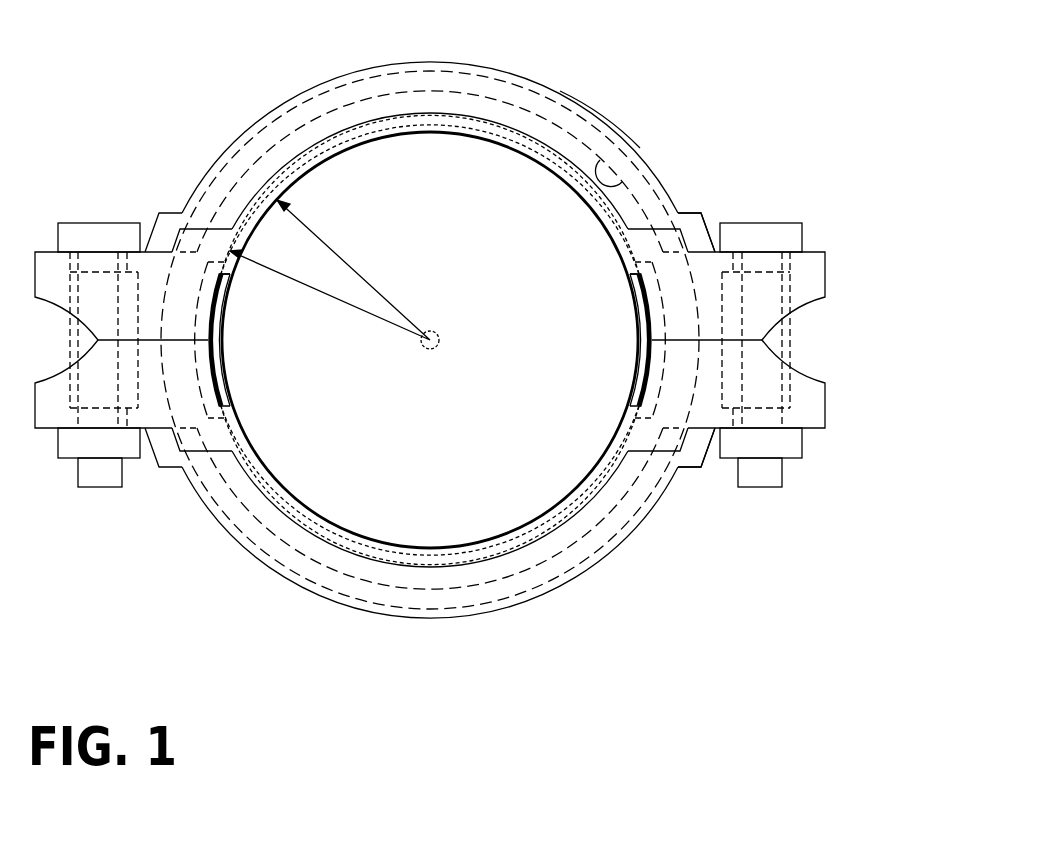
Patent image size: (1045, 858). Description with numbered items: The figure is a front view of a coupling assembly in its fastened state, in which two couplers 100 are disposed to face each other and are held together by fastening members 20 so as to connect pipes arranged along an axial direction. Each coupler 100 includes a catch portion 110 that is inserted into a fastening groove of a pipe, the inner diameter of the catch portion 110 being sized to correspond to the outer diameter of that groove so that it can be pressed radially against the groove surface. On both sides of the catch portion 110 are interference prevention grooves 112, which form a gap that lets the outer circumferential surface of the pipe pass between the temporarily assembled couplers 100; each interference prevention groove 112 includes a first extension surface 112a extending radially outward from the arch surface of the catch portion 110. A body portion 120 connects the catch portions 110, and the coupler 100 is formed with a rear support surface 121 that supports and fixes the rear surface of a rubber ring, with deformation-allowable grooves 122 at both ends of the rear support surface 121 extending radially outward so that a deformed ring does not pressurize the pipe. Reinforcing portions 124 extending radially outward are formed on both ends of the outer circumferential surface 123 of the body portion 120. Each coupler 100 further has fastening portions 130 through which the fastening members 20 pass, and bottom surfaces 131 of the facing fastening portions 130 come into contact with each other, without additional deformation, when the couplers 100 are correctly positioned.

The coupler 100 is at (601, 759).
The catch portion 110 is at (430, 341).
The interference prevention groove 112 is at (430, 340).
The first extension surface 112a is at (633, 275).
The body portion 120 is at (430, 341).
The rear support surface 121 is at (623, 182).
The deformation-allowable groove 122 is at (667, 383).
The outer circumferential surface of the body portion 123 is at (612, 125).
The reinforcing portion 124 is at (690, 207).
The fastening portion 130 is at (580, 339).
The bottom surface 131 is at (650, 355).
The fastening member 20 is at (98, 233).